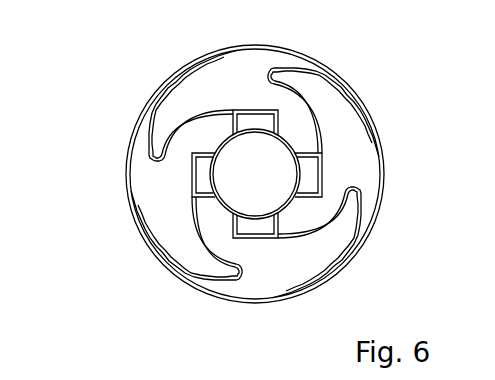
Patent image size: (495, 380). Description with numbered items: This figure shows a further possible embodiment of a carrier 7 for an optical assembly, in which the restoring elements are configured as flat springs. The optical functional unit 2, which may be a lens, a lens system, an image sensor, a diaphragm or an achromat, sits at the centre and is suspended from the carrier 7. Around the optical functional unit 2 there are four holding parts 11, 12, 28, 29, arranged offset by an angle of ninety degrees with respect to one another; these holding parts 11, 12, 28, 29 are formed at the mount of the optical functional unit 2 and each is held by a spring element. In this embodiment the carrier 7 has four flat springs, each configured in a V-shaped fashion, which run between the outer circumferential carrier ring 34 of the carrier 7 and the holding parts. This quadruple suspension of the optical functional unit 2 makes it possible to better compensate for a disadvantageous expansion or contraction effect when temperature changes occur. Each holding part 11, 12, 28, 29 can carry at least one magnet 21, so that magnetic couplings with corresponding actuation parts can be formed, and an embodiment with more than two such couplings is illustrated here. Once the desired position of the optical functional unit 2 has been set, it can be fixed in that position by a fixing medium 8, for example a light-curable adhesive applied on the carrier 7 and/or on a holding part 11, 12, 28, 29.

The optical functional unit 2 is at (258, 152).
The carrier 7 is at (228, 150).
The fixing medium 8 is at (291, 108).
The first holding part 11 is at (320, 170).
The second holding part 12 is at (235, 110).
The magnet 21 is at (252, 118).
The holding part 28 is at (231, 238).
The holding part 29 is at (233, 232).
The carrier ring 34 is at (358, 257).